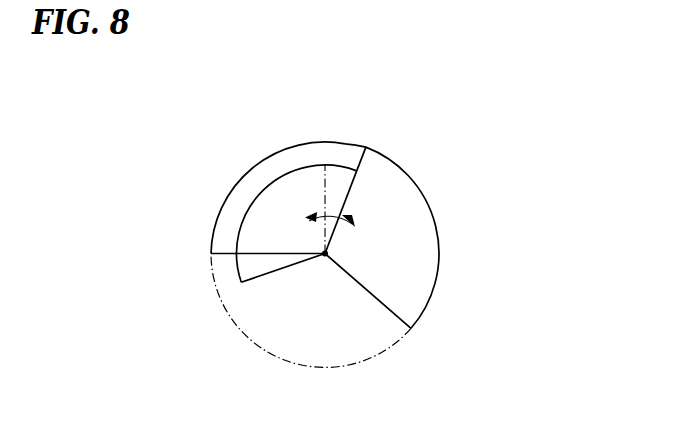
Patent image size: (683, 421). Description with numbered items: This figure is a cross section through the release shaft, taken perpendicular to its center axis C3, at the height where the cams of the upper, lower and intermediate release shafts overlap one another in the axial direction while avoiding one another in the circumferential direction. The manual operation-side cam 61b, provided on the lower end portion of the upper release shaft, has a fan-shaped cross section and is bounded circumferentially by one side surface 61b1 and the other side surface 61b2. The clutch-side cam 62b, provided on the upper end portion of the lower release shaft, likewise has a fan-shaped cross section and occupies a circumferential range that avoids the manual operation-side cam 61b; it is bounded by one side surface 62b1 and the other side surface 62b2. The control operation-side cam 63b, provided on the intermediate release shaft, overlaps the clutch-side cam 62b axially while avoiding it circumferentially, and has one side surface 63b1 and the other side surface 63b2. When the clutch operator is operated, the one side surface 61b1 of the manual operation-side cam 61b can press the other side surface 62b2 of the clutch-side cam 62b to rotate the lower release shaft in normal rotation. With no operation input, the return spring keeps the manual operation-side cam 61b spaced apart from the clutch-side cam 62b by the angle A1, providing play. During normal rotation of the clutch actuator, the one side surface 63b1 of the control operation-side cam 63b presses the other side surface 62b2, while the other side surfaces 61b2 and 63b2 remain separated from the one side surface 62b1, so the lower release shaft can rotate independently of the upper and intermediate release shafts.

The manual operation-side cam 61b is at (268, 205).
The one side surface of the manual operation-side cam 61b1 is at (350, 192).
The other side surface of the manual operation-side cam 61b2 is at (272, 257).
The clutch-side cam 62b is at (433, 245).
The one side surface of the clutch-side cam 62b1 is at (394, 316).
The other side surface of the clutch-side cam 62b2 is at (348, 178).
The control operation-side cam 63b is at (298, 153).
The one side surface of the control operation-side cam 63b1 is at (366, 156).
The other side surface of the control operation-side cam 63b2 is at (212, 281).
The center axis of the release shaft C3 is at (324, 258).
The angle A1 is at (353, 225).